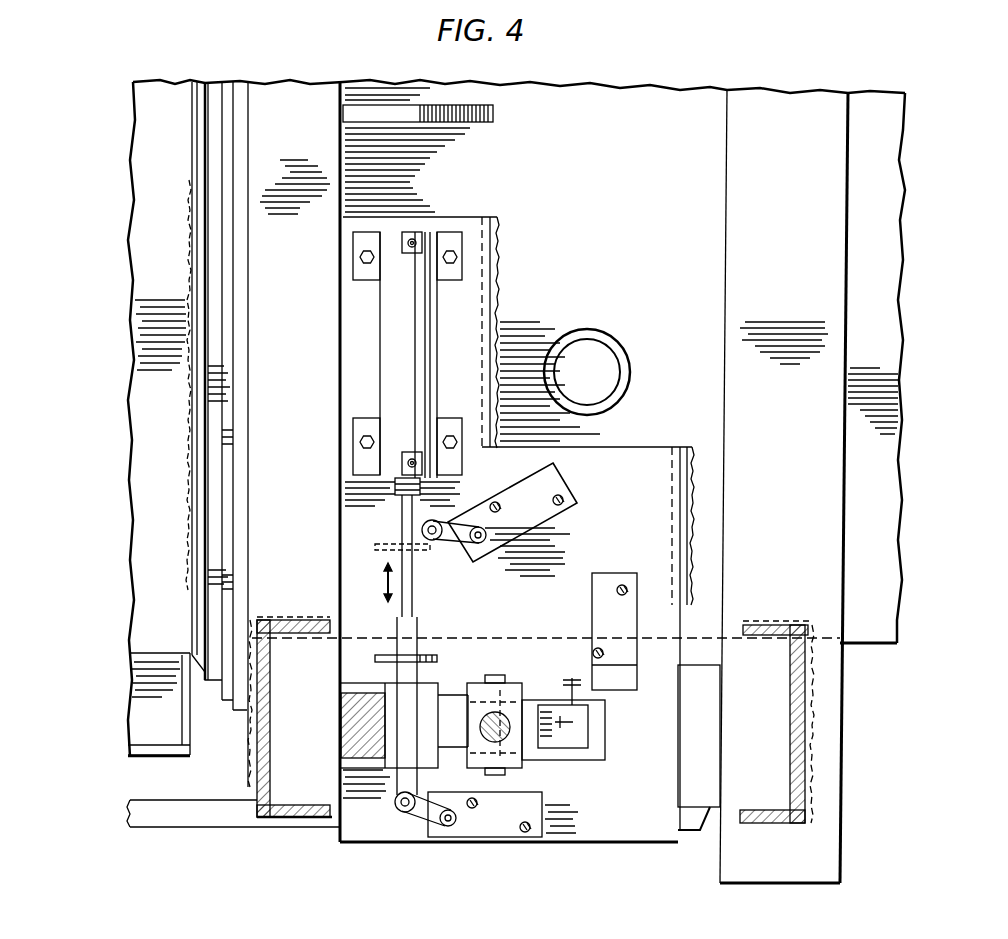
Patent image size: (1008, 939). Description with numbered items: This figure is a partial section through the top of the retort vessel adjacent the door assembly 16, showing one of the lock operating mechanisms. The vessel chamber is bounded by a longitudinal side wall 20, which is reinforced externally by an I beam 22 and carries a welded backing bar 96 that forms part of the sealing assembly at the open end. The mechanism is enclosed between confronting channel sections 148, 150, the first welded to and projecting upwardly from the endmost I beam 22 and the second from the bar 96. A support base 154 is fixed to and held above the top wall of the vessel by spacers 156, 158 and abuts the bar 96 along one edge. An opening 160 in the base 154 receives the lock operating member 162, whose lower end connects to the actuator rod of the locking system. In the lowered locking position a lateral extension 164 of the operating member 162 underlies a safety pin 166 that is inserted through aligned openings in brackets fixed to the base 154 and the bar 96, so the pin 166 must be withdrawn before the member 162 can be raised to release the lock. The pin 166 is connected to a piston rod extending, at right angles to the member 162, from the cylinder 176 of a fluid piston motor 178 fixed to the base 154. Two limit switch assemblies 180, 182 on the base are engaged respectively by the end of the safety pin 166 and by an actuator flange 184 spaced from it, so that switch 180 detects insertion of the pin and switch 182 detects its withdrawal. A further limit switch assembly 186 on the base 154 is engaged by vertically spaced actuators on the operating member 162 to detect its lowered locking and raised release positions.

The door assembly 16 is at (126, 489).
The backing bar 96 is at (286, 100).
The I beam 22 is at (777, 113).
The longitudinal side wall 20 is at (875, 123).
The channel section 148 is at (800, 770).
The channel section 150 is at (292, 830).
The support base 154 is at (370, 825).
The spacer 156 is at (685, 520).
The spacer 158 is at (498, 318).
The opening 160 is at (612, 735).
The lock operating member 162 is at (530, 752).
The lateral extension 164 is at (388, 684).
The safety pin 166 is at (345, 735).
The cylinder 176 is at (425, 305).
The fluid piston motor 178 is at (420, 369).
The limit switch assembly 180 is at (500, 820).
The limit switch assembly 182 is at (545, 492).
The actuator flange 184 is at (375, 655).
The limit switch assembly 186 is at (630, 617).